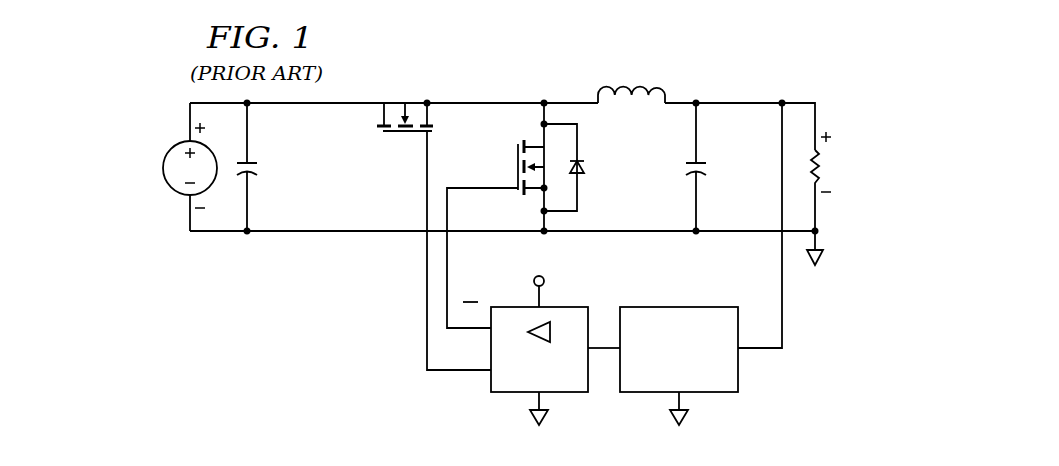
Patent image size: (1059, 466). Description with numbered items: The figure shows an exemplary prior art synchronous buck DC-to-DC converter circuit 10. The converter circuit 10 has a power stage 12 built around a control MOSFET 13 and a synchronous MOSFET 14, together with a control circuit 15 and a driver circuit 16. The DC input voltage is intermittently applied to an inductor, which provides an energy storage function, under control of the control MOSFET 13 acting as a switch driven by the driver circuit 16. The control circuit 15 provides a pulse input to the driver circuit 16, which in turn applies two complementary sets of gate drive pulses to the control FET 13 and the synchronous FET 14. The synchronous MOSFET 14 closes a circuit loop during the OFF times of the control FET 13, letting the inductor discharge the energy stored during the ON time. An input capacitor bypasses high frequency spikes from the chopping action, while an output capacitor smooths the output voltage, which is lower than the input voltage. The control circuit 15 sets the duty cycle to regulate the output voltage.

The converter circuit 10 is at (112, 112).
The power stage 12 is at (565, 74).
The control MOSFET 13 is at (391, 135).
The synchronous MOSFET 14 is at (517, 148).
The control circuit 15 is at (708, 393).
The driver circuit 16 is at (515, 393).